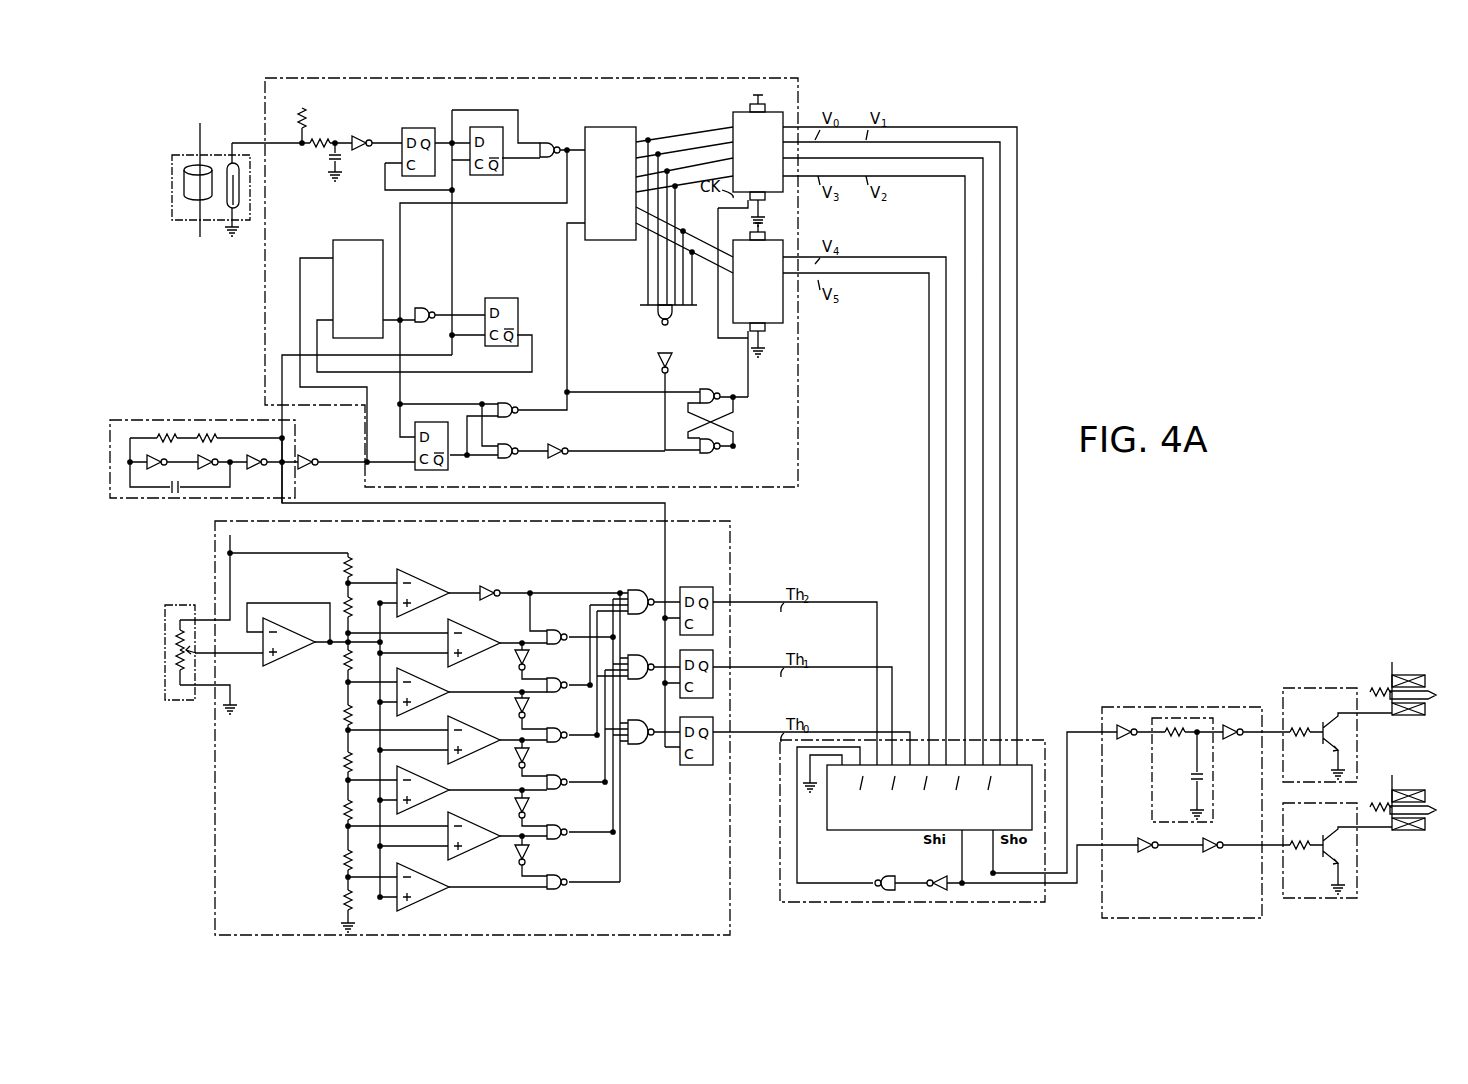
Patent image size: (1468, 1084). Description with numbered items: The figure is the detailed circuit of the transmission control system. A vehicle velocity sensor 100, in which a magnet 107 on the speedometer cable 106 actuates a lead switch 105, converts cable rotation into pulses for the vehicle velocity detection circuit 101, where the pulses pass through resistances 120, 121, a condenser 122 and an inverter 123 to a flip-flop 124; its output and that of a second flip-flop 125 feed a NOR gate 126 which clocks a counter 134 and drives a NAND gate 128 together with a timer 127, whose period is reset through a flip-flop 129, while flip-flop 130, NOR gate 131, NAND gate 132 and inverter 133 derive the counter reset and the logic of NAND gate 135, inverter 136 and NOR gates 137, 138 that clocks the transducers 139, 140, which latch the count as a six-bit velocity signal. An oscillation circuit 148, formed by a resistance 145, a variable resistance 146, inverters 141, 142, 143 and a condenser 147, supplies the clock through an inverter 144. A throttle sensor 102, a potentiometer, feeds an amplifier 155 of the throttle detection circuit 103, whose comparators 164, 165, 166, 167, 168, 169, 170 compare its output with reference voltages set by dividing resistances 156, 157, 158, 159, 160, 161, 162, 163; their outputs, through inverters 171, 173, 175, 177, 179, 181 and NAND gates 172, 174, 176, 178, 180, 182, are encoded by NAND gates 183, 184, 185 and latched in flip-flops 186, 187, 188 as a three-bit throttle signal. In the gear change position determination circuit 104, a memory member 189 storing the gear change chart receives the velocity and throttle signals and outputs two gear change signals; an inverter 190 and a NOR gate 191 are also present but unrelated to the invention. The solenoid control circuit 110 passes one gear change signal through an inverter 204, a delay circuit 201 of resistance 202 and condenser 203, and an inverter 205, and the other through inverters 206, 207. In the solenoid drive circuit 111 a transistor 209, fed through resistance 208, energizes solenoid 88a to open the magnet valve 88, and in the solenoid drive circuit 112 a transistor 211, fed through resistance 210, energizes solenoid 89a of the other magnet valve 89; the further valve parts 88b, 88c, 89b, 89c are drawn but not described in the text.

The magnet valve 88 is at (1410, 689).
The solenoid 88a is at (1426, 681).
The actuator rod 88b is at (1412, 677).
The return spring 88c is at (1380, 688).
The electromagnetic actuator 89 is at (1410, 804).
The solenoid 89a is at (1426, 796).
The actuator rod 89b is at (1412, 792).
The return spring 89c is at (1380, 803).
The vehicle velocity sensor 100 is at (188, 154).
The vehicle velocity detection circuit 101 is at (268, 118).
The throttle sensor 102 is at (164, 640).
The throttle detection circuit 103 is at (212, 576).
The gear change position determination circuit 104 is at (778, 812).
The lead switch 105 is at (238, 212).
The speedometer cable 106 is at (184, 158).
The magnet 107 is at (190, 192).
The solenoid control circuit 110 is at (1155, 707).
The solenoid drive circuit 111 is at (1282, 694).
The solenoid drive circuit 112 is at (1282, 812).
The resistance 120 is at (300, 110).
The resistance 121 is at (328, 131).
The condenser 122 is at (329, 162).
The inverter 123 is at (362, 131).
The flip-flop 124 is at (414, 128).
The flip-flop 125 is at (490, 127).
The NOR gate 126 is at (540, 137).
The timer 127 is at (366, 240).
The NAND gate 128 is at (426, 308).
The flip-flop 129 is at (503, 292).
The flip-flop 130 is at (433, 422).
The NOR gate 131 is at (515, 399).
The NAND gate 132 is at (515, 441).
The inverter 133 is at (565, 441).
The counter 134 is at (610, 127).
The NAND gate 135 is at (655, 318).
The inverter 136 is at (658, 362).
The NOR gate 137 is at (708, 390).
The NOR gate 138 is at (708, 452).
The transducer 139 is at (733, 116).
The transducer 140 is at (735, 246).
The inverter 141 is at (169, 455).
The inverter 142 is at (219, 455).
The inverter 143 is at (264, 454).
The inverter 144 is at (315, 454).
The resistance 145 is at (165, 434).
The variable resistance 146 is at (210, 434).
The condenser 147 is at (172, 493).
The oscillation circuit 148 is at (125, 420).
The amplifier 155 is at (306, 650).
The dividing resistance 156 is at (364, 567).
The dividing resistance 157 is at (364, 605).
The dividing resistance 158 is at (364, 658).
The dividing resistance 159 is at (346, 710).
The dividing resistance 160 is at (346, 760).
The dividing resistance 161 is at (346, 806).
The dividing resistance 162 is at (346, 856).
The dividing resistance 163 is at (346, 900).
The comparator 164 is at (432, 574).
The comparator 165 is at (484, 624).
The comparator 166 is at (432, 674).
The comparator 167 is at (484, 722).
The comparator 168 is at (432, 770).
The comparator 169 is at (484, 816).
The comparator 170 is at (432, 868).
The inverter 171 is at (494, 580).
The NAND gate 172 is at (558, 630).
The inverter 173 is at (518, 666).
The NAND gate 174 is at (558, 678).
The inverter 175 is at (518, 714).
The NAND gate 176 is at (558, 728).
The inverter 177 is at (518, 764).
The NAND gate 178 is at (558, 775).
The inverter 179 is at (518, 812).
The NAND gate 180 is at (558, 825).
The inverter 181 is at (518, 862).
The NAND gate 182 is at (560, 870).
The NAND gate 183 is at (644, 587).
The NAND gate 184 is at (644, 654).
The NAND gate 185 is at (644, 718).
The flip-flop 186 is at (697, 587).
The flip-flop 187 is at (713, 660).
The flip-flop 188 is at (697, 765).
The memory member 189 is at (838, 830).
The inverter 190 is at (938, 875).
The NOR gate 191 is at (886, 875).
The delay circuit 201 is at (1152, 806).
The resistance 202 is at (1176, 738).
The condenser 203 is at (1196, 780).
The inverter 204 is at (1130, 740).
The inverter 205 is at (1238, 740).
The inverter 206 is at (1150, 854).
The inverter 207 is at (1222, 850).
The resistance 208 is at (1304, 719).
The transistor 209 is at (1328, 722).
The resistance 210 is at (1302, 832).
The transistor 211 is at (1327, 836).